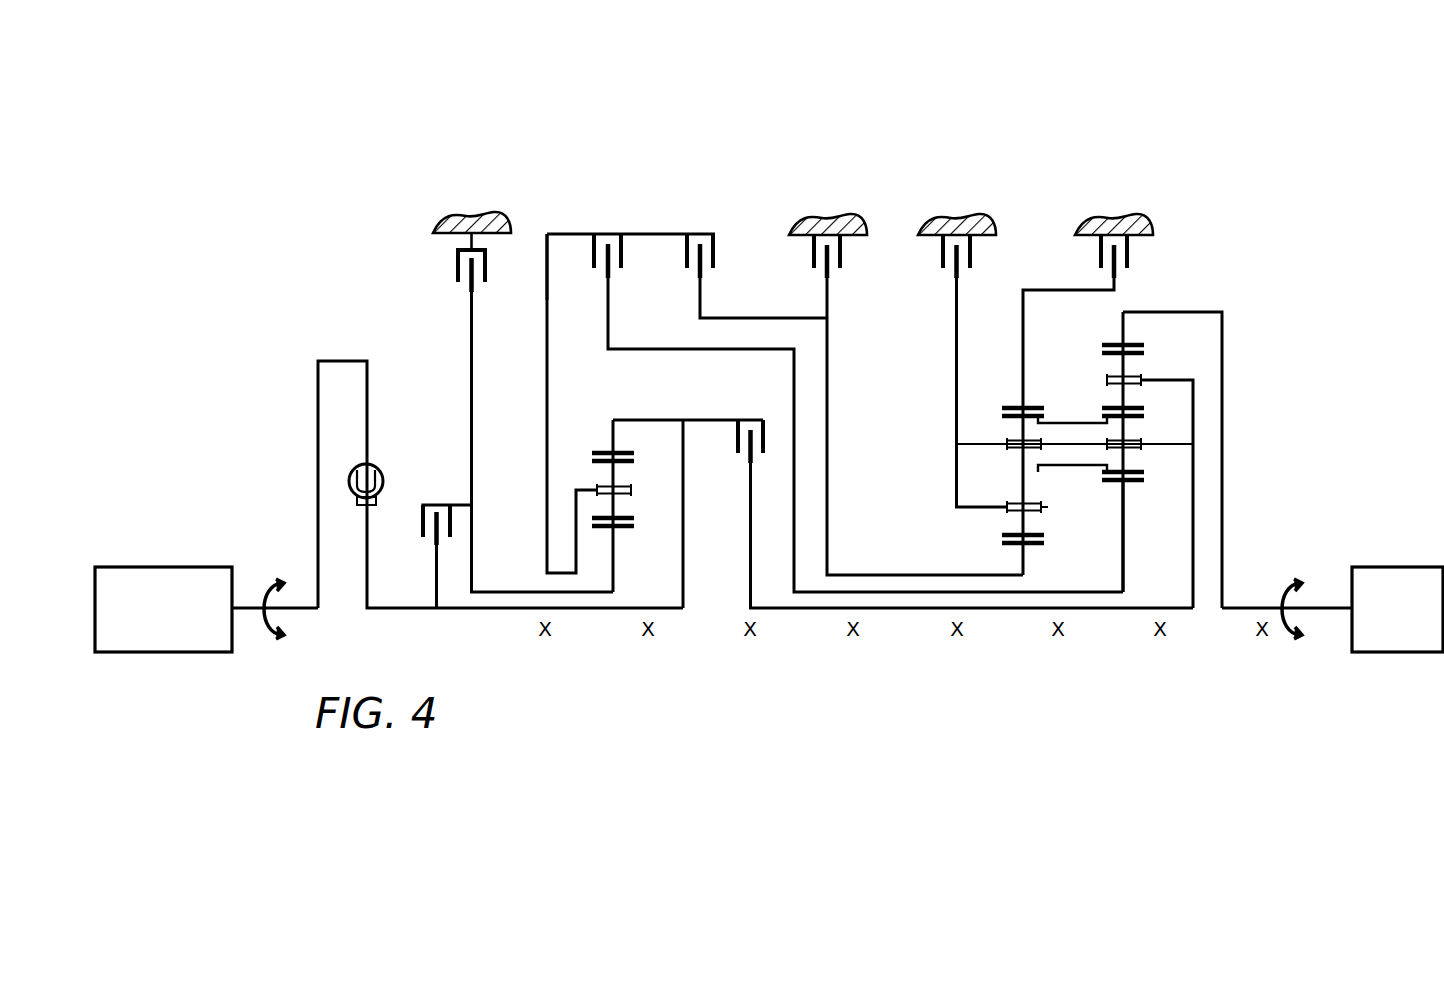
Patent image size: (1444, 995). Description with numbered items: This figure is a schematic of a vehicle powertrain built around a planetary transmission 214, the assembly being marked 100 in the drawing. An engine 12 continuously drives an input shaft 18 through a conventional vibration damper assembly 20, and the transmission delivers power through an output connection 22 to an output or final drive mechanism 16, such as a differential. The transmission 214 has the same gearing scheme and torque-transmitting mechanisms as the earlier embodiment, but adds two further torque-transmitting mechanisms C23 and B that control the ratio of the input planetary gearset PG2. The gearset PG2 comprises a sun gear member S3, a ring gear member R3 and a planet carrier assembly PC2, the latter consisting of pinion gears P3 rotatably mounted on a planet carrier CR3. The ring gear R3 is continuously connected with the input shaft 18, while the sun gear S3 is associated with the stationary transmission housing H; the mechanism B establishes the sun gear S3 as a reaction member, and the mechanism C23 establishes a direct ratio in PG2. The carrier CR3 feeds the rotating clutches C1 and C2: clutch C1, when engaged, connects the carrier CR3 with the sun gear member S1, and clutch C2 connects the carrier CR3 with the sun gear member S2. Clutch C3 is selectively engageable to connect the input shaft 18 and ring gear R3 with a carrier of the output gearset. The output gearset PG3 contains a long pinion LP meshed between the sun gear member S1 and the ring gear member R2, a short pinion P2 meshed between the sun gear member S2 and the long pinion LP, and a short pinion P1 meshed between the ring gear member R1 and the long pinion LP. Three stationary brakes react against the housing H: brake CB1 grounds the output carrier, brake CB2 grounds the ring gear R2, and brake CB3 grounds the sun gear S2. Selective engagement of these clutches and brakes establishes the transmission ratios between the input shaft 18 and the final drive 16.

The engine 12 is at (166, 562).
The output or final drive mechanism 16 is at (1408, 561).
The input shaft 18 is at (394, 606).
The vibration damper assembly 20 is at (391, 477).
The output shaft 22 is at (1253, 606).
The transmission 100 is at (405, 222).
The planetary transmission 214 is at (752, 208).
The transmission housing H is at (488, 221).
The torque-transmitting mechanism B is at (451, 272).
The torque-transmitting mechanism C1 is at (835, 401).
The torque-transmitting mechanism C2 is at (756, 264).
The torque-transmitting mechanism C3 is at (965, 501).
The torque-transmitting mechanism C23 is at (444, 544).
The torque-transmitting mechanism CB1 is at (963, 347).
The torque-transmitting mechanism CB2 is at (1088, 297).
The torque-transmitting mechanism CB3 is at (906, 381).
The planet carrier CR3 is at (575, 507).
The planet carrier assembly PC2 is at (648, 493).
The input planetary gearset PG2 is at (629, 555).
The planetary gearset PG3 is at (1069, 580).
The ring gear member R1 is at (1162, 460).
The short pinion P1 is at (1150, 481).
The long pinion LP is at (1138, 435).
The sun gear member S1 is at (1138, 536).
The ring gear member R2 is at (1030, 398).
The short pinion P2 is at (1039, 516).
The sun gear member S2 is at (1029, 552).
The ring gear member R3 is at (607, 445).
The pinion gears P3 is at (598, 480).
The sun gear member S3 is at (623, 535).